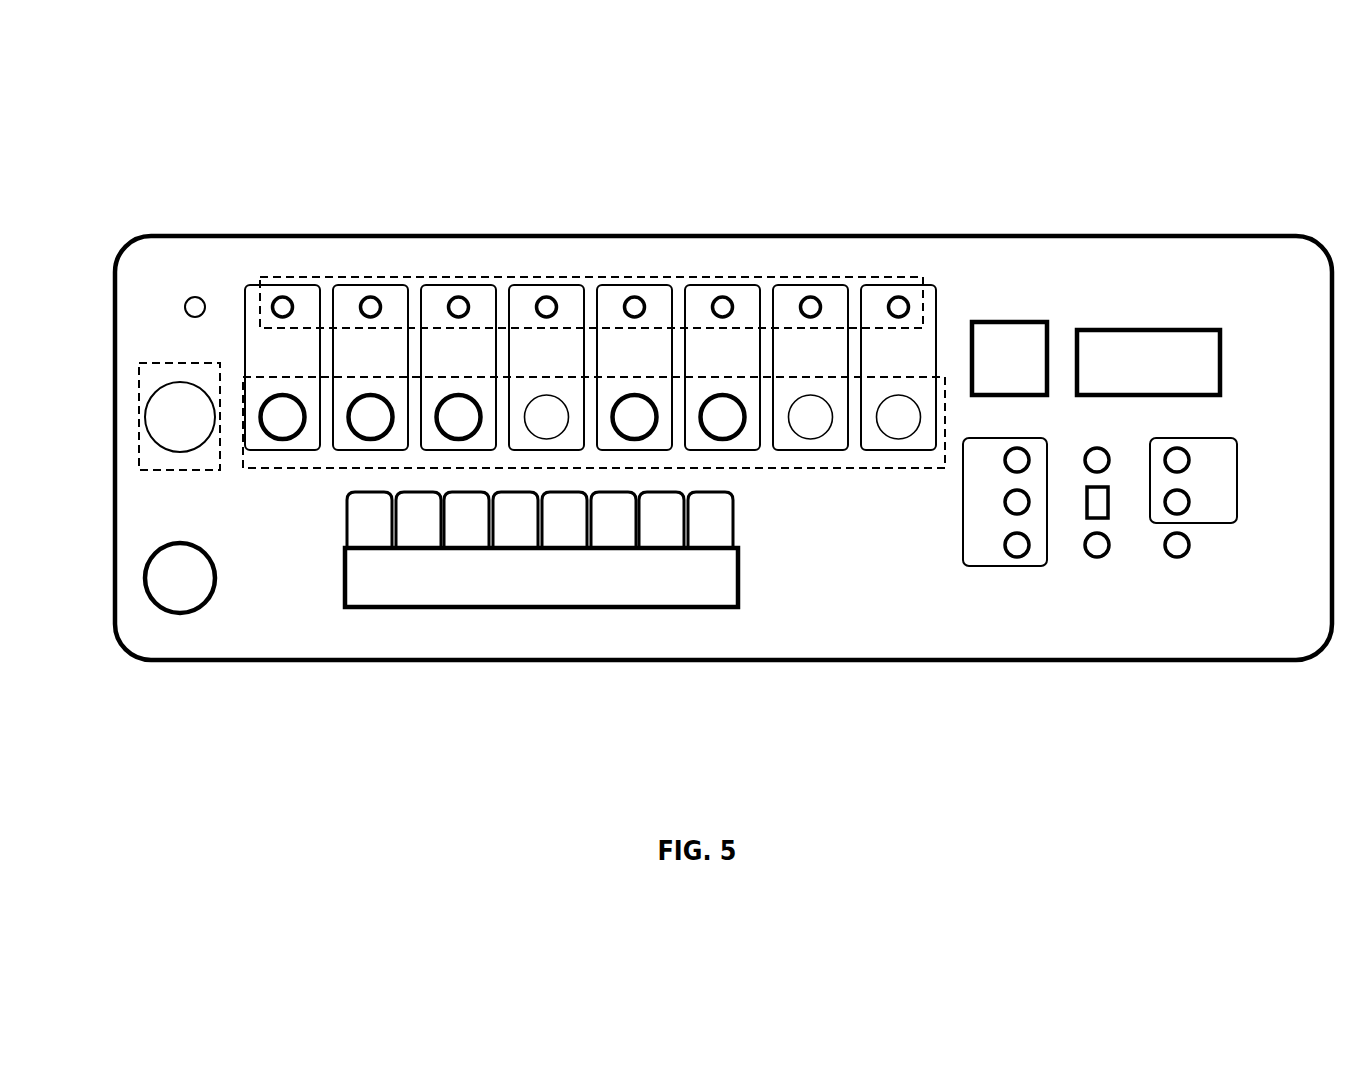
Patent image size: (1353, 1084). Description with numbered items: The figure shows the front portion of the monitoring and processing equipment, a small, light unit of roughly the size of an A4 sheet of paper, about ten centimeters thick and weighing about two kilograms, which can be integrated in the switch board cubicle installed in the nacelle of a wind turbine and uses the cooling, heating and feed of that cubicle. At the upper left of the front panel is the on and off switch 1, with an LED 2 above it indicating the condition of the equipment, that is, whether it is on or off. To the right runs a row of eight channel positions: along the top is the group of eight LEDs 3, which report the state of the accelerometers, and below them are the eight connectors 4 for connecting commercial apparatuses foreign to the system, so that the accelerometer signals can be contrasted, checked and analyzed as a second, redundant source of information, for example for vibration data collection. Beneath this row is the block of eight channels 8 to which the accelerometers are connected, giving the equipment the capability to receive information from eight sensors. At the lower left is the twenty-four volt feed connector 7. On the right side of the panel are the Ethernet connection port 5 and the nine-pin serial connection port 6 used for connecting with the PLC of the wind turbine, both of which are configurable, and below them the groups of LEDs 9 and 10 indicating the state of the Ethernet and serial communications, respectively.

The on and off switch 1 is at (170, 410).
The LED 2 is at (195, 298).
The group of 8 LEDs 3 is at (505, 275).
The connectors 4 is at (782, 470).
The Ethernet connection port 5 is at (1008, 355).
The RS-232 connection port 6 is at (1160, 358).
The feed connector 7 is at (180, 578).
The channels 8 is at (508, 580).
The group of LEDs 9 is at (995, 566).
The group of LEDs 10 is at (1190, 513).